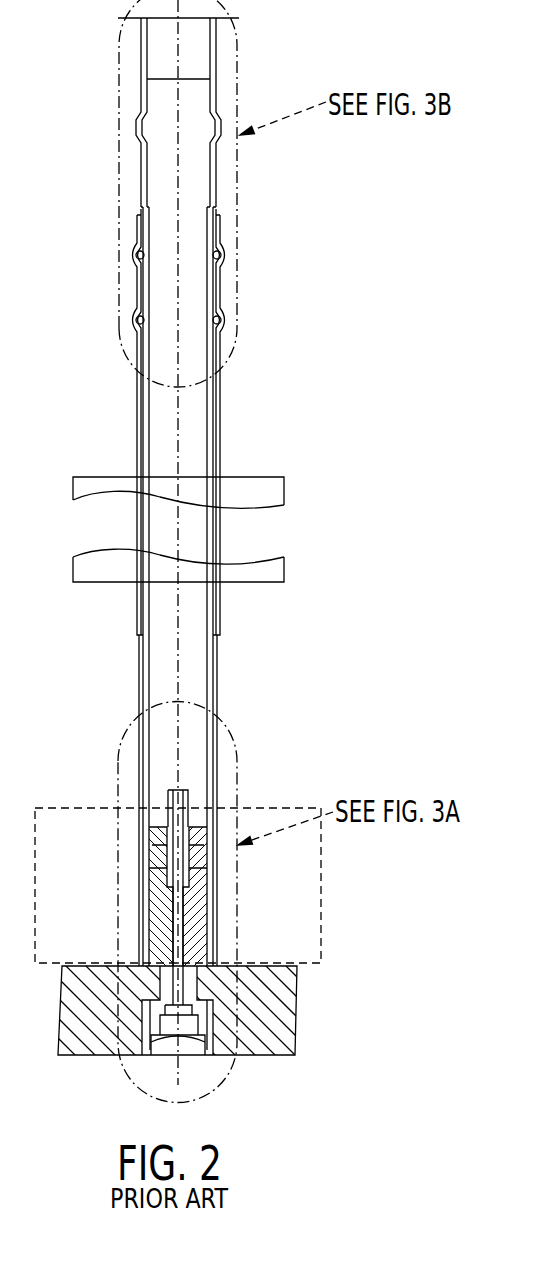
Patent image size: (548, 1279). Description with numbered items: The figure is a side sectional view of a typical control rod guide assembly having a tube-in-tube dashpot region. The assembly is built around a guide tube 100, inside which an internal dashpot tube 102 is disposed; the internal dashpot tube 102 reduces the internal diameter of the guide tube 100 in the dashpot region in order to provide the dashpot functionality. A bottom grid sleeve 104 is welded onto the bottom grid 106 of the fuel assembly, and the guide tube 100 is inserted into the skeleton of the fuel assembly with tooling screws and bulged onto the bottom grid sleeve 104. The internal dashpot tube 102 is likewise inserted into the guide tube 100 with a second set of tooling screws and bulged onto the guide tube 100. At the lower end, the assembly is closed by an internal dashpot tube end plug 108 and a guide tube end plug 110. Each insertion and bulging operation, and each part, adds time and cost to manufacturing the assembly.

The guide tube 100 is at (216, 60).
The internal dashpot tube 102 is at (212, 206).
The bottom grid sleeve 104 is at (219, 298).
The bottom grid 106 is at (300, 485).
The internal dashpot tube end plug 108 is at (199, 823).
The guide tube end plug 110 is at (217, 936).